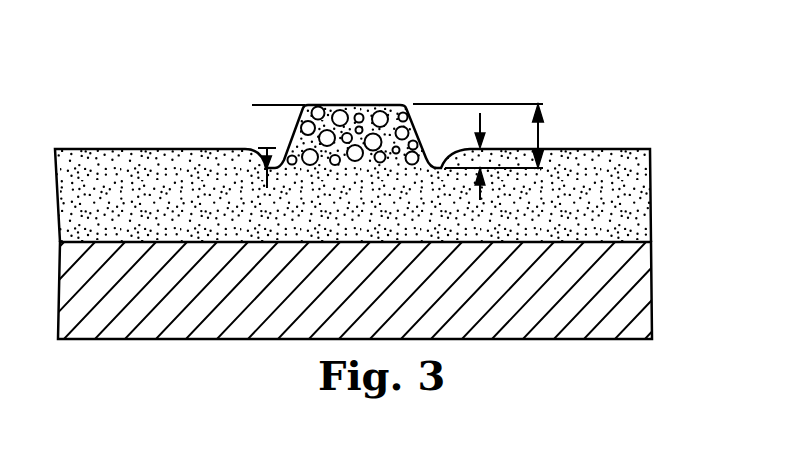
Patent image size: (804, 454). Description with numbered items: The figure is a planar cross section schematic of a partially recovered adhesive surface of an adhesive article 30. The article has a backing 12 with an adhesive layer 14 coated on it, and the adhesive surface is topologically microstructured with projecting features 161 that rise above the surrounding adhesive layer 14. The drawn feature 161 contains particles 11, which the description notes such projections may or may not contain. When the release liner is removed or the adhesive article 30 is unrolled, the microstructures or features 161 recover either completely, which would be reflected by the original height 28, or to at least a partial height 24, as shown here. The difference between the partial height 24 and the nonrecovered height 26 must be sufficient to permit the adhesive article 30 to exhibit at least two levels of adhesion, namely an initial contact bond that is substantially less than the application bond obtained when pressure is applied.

The adhesive article 30 is at (183, 106).
The backing 12 is at (628, 278).
The adhesive layer 14 is at (630, 183).
The microstructures or features 161 is at (392, 103).
The particles 11 is at (360, 105).
The partial height 24 is at (265, 85).
The nonrecovered height 26 is at (480, 116).
The original height 28 is at (540, 137).